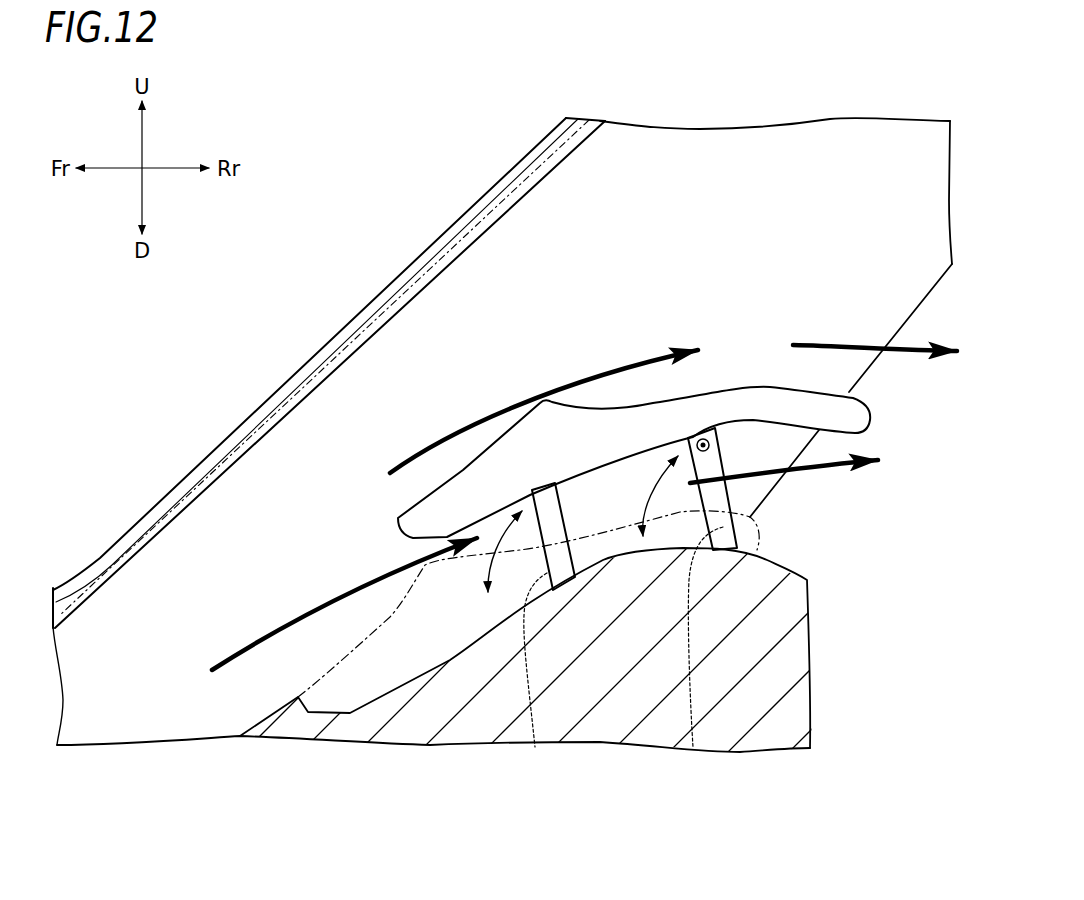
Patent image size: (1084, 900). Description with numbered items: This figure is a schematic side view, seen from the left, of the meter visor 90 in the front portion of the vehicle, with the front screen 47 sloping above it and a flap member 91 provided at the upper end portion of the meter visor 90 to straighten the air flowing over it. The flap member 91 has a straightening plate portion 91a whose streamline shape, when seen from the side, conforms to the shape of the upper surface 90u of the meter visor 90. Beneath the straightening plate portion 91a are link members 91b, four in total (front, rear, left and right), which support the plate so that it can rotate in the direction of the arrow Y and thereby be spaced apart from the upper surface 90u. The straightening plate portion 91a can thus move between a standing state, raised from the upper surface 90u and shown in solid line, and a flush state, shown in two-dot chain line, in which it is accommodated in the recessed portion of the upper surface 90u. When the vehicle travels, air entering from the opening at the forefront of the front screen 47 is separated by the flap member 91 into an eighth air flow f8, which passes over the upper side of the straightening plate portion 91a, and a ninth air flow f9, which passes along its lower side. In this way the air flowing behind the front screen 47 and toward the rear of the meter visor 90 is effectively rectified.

The front screen 47 is at (383, 293).
The meter visor 90 is at (775, 698).
The upper surface of the meter visor 90u is at (783, 557).
The flap member 91 is at (720, 394).
The straightening plate portion 91a is at (763, 400).
The link members 91b is at (535, 747).
The eighth air flow f8 is at (497, 410).
The ninth air flow f9 is at (318, 610).
The arrow Y (rotation direction) Y is at (490, 572).